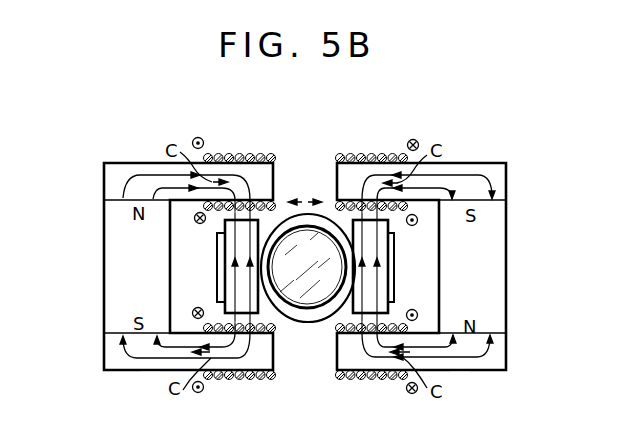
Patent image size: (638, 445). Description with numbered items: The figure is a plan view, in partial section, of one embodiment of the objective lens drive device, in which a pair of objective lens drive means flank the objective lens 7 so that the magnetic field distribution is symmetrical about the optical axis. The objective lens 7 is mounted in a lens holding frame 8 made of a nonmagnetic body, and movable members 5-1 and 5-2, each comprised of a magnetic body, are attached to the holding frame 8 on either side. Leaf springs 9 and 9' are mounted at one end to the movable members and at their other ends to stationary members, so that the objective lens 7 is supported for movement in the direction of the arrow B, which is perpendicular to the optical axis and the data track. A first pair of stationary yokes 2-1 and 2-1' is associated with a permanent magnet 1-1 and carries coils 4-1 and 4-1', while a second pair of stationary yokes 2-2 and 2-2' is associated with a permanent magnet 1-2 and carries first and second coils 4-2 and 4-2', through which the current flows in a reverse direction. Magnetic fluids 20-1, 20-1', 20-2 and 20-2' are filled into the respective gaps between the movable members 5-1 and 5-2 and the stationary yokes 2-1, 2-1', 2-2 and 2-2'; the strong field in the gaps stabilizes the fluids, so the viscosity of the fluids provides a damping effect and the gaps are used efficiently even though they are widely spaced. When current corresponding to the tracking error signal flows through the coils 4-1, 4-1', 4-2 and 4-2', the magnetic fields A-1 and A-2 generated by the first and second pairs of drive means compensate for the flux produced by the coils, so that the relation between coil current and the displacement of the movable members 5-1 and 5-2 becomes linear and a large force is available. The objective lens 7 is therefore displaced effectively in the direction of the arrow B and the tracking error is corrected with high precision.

The permanent magnet 1-1 is at (112, 251).
The permanent magnet 1-2 is at (492, 254).
The stationary yoke 2-1 is at (145, 185).
The stationary yoke 2-1' is at (145, 345).
The stationary yoke 2-2 is at (455, 185).
The stationary yoke 2-2' is at (463, 348).
The coil 4-1 is at (240, 168).
The coil 4-1' is at (240, 373).
The first coil 4-2 is at (372, 168).
The second coil 4-2' is at (372, 373).
The movable member 5-1 is at (240, 288).
The movable member 5-2 is at (370, 251).
The objective lens 7 is at (290, 220).
The lens holding frame 8 is at (290, 220).
The leaf spring 9 is at (203, 267).
The leaf spring 9' is at (406, 267).
The magnetic fluid 20-1 is at (211, 231).
The magnetic fluid 20-1' is at (181, 307).
The magnetic fluid 20-2 is at (330, 186).
The magnetic fluid 20-2' is at (327, 335).
The magnetic field A-1 is at (149, 362).
The magnetic field A-2 is at (458, 358).
The arrow B is at (305, 190).